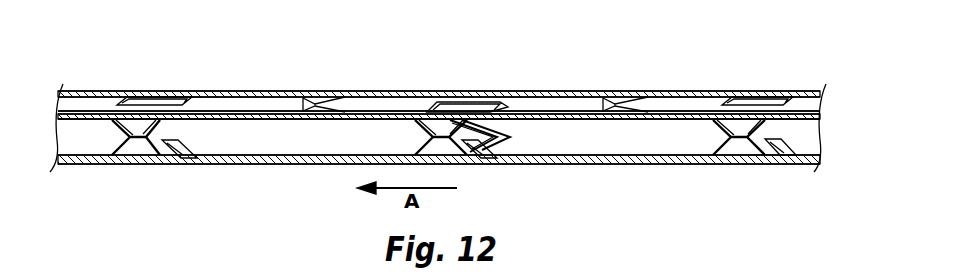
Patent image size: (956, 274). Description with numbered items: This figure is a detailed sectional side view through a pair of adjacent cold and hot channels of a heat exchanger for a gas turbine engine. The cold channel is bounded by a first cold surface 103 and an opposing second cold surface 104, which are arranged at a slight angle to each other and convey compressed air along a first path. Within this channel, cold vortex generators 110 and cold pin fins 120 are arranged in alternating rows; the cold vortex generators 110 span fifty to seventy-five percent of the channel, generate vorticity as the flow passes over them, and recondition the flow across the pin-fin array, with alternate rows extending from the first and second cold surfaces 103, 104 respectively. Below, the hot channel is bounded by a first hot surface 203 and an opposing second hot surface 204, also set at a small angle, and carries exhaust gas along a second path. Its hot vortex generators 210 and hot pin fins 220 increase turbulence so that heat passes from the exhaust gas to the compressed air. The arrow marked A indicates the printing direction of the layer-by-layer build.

The first cold surface 103 is at (697, 118).
The second cold surface 104 is at (705, 93).
The cold vortex generator 110 is at (165, 91).
The cold pin fin 120 is at (320, 96).
The first hot surface 203 is at (263, 158).
The second hot surface 204 is at (385, 118).
The hot vortex generator 210 is at (198, 150).
The hot pin fin 220 is at (140, 148).